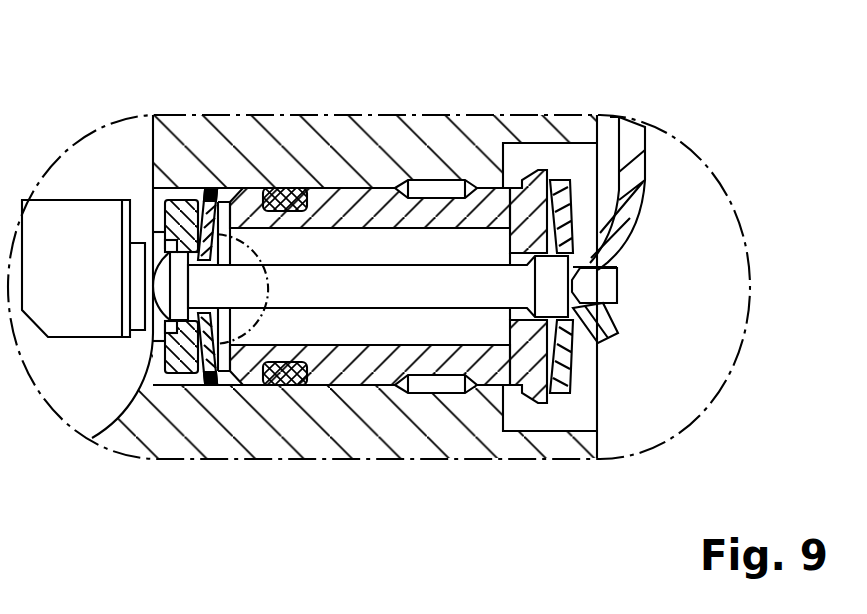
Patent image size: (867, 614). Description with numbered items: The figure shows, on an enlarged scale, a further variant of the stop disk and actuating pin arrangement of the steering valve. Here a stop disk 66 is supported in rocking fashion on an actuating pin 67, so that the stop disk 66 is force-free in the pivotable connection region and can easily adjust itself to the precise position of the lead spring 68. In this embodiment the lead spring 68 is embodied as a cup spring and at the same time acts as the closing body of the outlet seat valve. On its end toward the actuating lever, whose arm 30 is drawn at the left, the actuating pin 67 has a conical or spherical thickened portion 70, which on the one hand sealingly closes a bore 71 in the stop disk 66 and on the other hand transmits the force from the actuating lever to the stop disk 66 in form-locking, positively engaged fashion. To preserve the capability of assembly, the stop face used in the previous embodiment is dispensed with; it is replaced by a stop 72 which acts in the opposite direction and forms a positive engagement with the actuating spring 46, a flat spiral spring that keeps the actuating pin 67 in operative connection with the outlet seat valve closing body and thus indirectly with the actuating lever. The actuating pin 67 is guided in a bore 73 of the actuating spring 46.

The arm 30 is at (72, 284).
The actuating spring 46 is at (630, 146).
The stop disk 66 is at (178, 212).
The actuating pin 67 is at (340, 283).
The lead spring 68 is at (208, 198).
The thickened portion 70 is at (177, 295).
The bore 71 is at (190, 252).
The stop 72 is at (597, 303).
The bore 73 is at (590, 268).